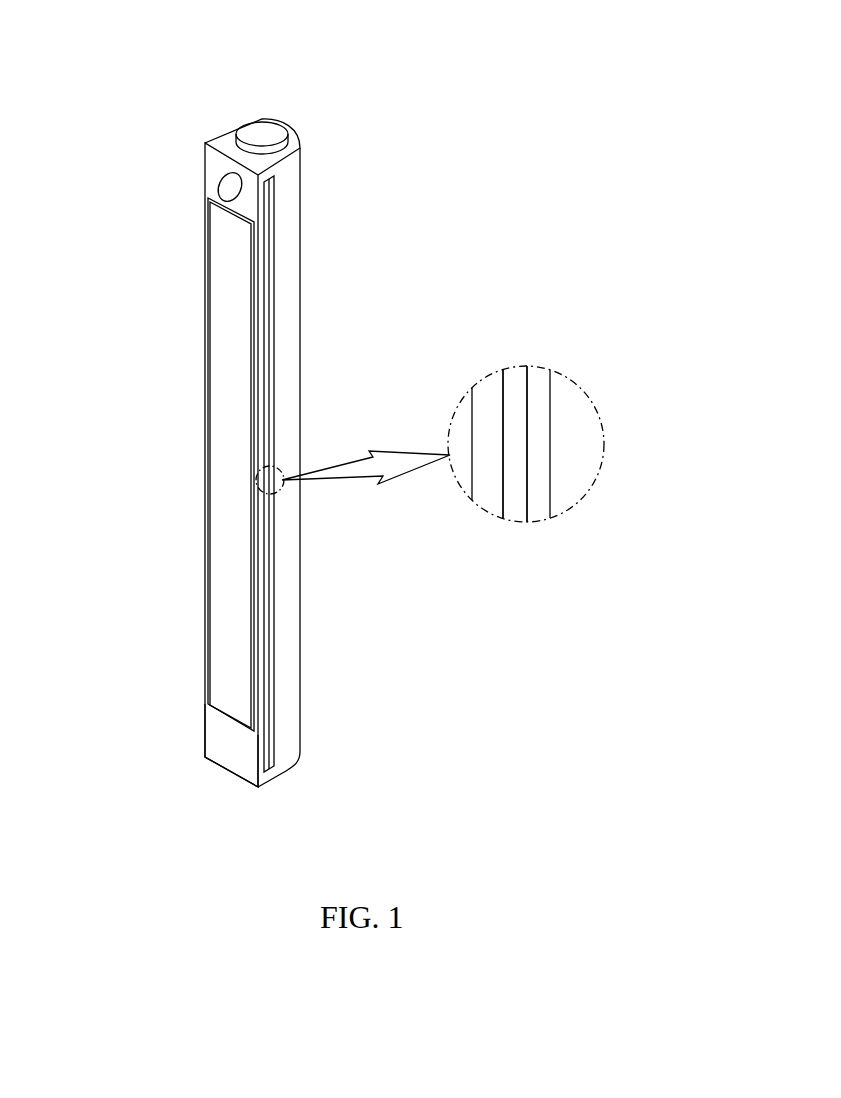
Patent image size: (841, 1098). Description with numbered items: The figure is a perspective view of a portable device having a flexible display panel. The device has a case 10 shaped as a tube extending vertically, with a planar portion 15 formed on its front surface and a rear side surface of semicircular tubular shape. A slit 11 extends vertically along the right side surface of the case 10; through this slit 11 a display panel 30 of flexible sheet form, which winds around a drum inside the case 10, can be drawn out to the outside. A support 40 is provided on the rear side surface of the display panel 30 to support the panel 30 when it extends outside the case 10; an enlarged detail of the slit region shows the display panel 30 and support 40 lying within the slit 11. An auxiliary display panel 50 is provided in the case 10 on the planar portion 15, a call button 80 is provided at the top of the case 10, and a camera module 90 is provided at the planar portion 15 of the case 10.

The case 10 is at (293, 193).
The slit 11 is at (505, 426).
The planar portion 15 is at (222, 728).
The display panel 30 is at (518, 393).
The support 40 is at (542, 417).
The auxiliary display panel 50 is at (222, 270).
The call button 80 is at (263, 133).
The camera module 90 is at (237, 187).